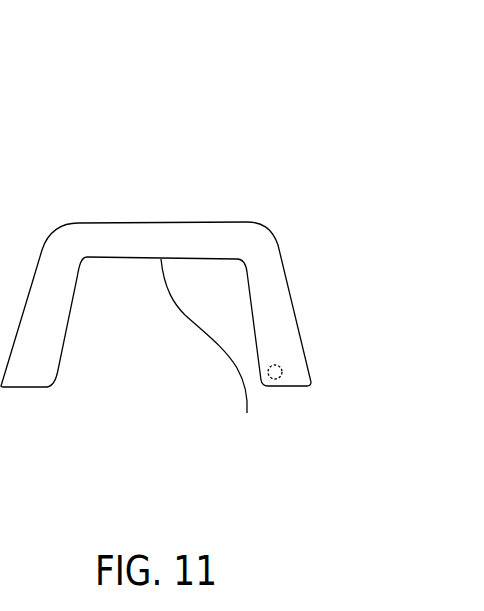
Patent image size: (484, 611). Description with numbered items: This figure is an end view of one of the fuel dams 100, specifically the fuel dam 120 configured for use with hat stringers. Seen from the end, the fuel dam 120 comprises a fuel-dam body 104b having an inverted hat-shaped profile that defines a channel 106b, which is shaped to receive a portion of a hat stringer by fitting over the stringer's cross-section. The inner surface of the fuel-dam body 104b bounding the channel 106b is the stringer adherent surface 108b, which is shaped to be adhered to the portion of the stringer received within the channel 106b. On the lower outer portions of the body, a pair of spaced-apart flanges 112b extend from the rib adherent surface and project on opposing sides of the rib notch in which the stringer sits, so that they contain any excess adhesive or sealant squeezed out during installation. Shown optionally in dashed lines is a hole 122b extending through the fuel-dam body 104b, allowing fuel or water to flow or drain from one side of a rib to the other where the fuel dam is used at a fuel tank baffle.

The fuel dam 100 is at (188, 238).
The fuel dam for use with hat stringers 120 is at (188, 273).
The fuel-dam body 104b is at (160, 221).
The channel 106b is at (133, 386).
The spaced-apart flanges 112b is at (292, 292).
The stringer adherent surface 108b is at (218, 353).
The hole 122b is at (273, 383).